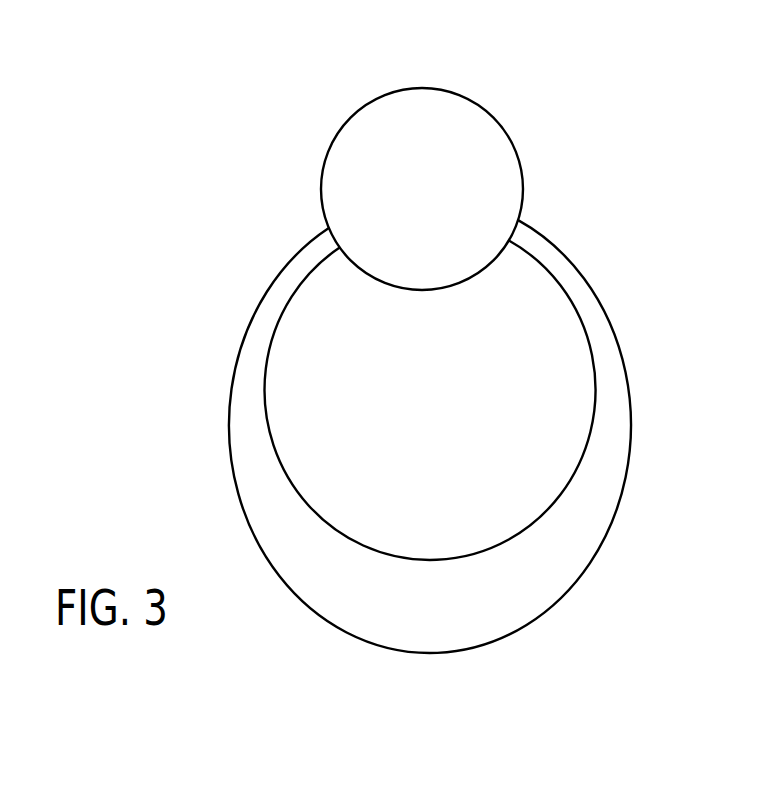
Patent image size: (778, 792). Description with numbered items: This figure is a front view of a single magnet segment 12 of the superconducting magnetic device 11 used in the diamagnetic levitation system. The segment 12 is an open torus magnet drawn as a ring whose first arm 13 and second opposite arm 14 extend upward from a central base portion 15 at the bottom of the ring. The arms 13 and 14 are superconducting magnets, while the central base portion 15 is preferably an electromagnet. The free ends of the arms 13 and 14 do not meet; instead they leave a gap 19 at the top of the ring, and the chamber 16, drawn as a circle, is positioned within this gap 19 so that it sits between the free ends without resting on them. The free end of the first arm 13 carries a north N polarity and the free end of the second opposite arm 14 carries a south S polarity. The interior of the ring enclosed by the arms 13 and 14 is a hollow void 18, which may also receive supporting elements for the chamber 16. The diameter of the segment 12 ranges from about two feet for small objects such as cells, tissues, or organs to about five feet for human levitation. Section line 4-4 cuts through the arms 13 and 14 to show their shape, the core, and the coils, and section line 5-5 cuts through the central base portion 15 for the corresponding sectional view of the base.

The superconducting magnetic device 11 is at (443, 454).
The segment 12 is at (411, 436).
The first arm 13 is at (253, 326).
The second opposite arm 14 is at (627, 368).
The central base portion 15 is at (478, 648).
The chamber 16 is at (435, 200).
The hollow void 18 is at (435, 394).
The gap 19 is at (492, 295).
The section line 4- 4 is at (283, 233).
The section line 5- 5 is at (435, 542).
The north polarity N is at (325, 245).
The south polarity S is at (525, 241).